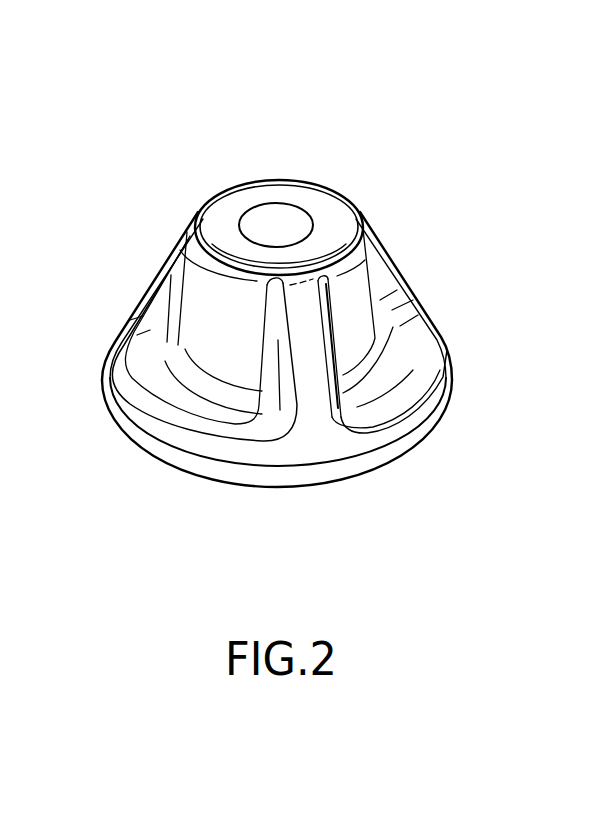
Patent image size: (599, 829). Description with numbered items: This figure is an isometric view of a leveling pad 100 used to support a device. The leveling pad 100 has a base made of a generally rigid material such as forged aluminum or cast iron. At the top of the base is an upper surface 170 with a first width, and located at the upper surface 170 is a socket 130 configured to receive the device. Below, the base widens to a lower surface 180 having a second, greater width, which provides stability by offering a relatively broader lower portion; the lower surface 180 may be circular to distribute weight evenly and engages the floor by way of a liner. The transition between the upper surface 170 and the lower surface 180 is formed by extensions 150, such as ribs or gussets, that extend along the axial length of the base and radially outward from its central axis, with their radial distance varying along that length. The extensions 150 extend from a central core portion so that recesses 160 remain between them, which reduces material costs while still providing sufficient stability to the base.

The leveling pad 100 is at (181, 128).
The socket 130 is at (292, 217).
The extensions 150 is at (133, 293).
The recesses 160 is at (178, 378).
The upper surface 170 is at (237, 185).
The lower surface 180 is at (417, 447).